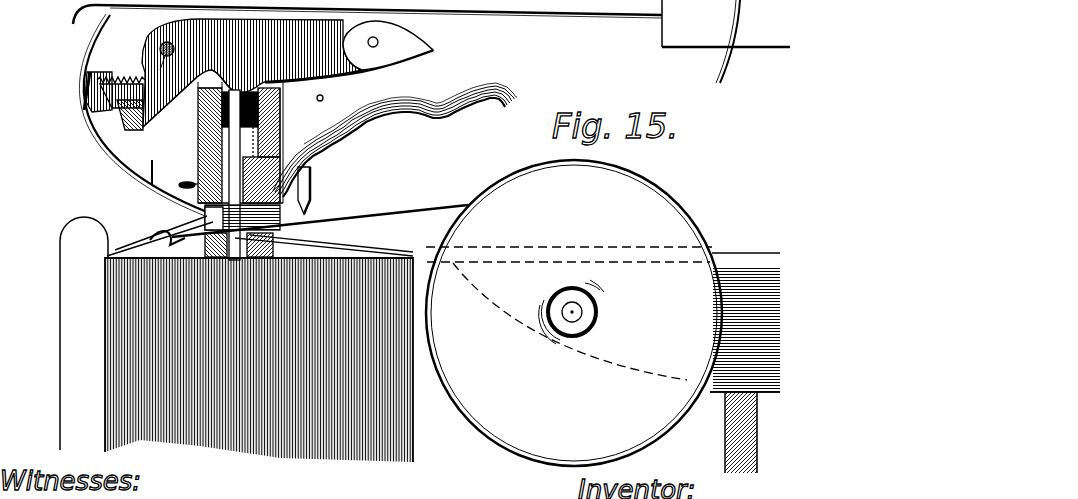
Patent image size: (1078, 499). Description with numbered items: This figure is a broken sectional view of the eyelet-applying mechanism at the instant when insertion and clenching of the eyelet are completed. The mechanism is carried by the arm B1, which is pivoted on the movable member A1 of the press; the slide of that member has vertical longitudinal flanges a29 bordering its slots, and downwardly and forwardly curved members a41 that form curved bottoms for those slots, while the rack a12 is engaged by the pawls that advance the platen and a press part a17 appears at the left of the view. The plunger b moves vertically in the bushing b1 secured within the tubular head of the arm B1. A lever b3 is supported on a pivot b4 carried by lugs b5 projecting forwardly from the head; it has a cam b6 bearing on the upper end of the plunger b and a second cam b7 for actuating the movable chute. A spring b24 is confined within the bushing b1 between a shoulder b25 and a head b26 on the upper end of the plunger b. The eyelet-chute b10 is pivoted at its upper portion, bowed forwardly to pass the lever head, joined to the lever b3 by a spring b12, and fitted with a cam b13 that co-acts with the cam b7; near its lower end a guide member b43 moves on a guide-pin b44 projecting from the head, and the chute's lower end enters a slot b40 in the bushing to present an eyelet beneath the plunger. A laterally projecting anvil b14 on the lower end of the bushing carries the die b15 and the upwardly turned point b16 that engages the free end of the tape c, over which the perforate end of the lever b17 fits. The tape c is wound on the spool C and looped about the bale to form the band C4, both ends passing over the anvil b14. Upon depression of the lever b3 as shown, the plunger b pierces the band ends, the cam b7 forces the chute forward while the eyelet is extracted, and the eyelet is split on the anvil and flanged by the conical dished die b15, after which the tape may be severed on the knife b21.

The eyelet-chute b10 is at (93, 38).
The spring b12 is at (115, 77).
The cam b13 is at (110, 100).
The lugs b5 is at (153, 30).
The cam b6 is at (240, 85).
The lever b3 is at (363, 45).
The arm B1 is at (470, 90).
The head b26 is at (283, 100).
The spring b24 is at (262, 138).
The pivot b4 is at (163, 95).
The cam b7 is at (133, 120).
The bushing b1 is at (197, 133).
The guide member b43 is at (150, 168).
The guide-pin b44 is at (185, 182).
The point b16 is at (150, 230).
The lever b17 is at (173, 217).
The shoulder b25 is at (313, 165).
The tape-severing knife b21 is at (310, 180).
The slot b40 is at (313, 213).
The anvil b14 is at (303, 237).
The die b15 is at (350, 240).
The plunger b is at (235, 175).
The tape c is at (320, 207).
The spool C is at (574, 313).
The band C4 is at (413, 442).
The flanges a29 is at (725, 363).
The movable member A1 is at (699, 439).
The rack a12 is at (749, 41).
The curved members a41 is at (727, 70).
The post a17 is at (73, 290).